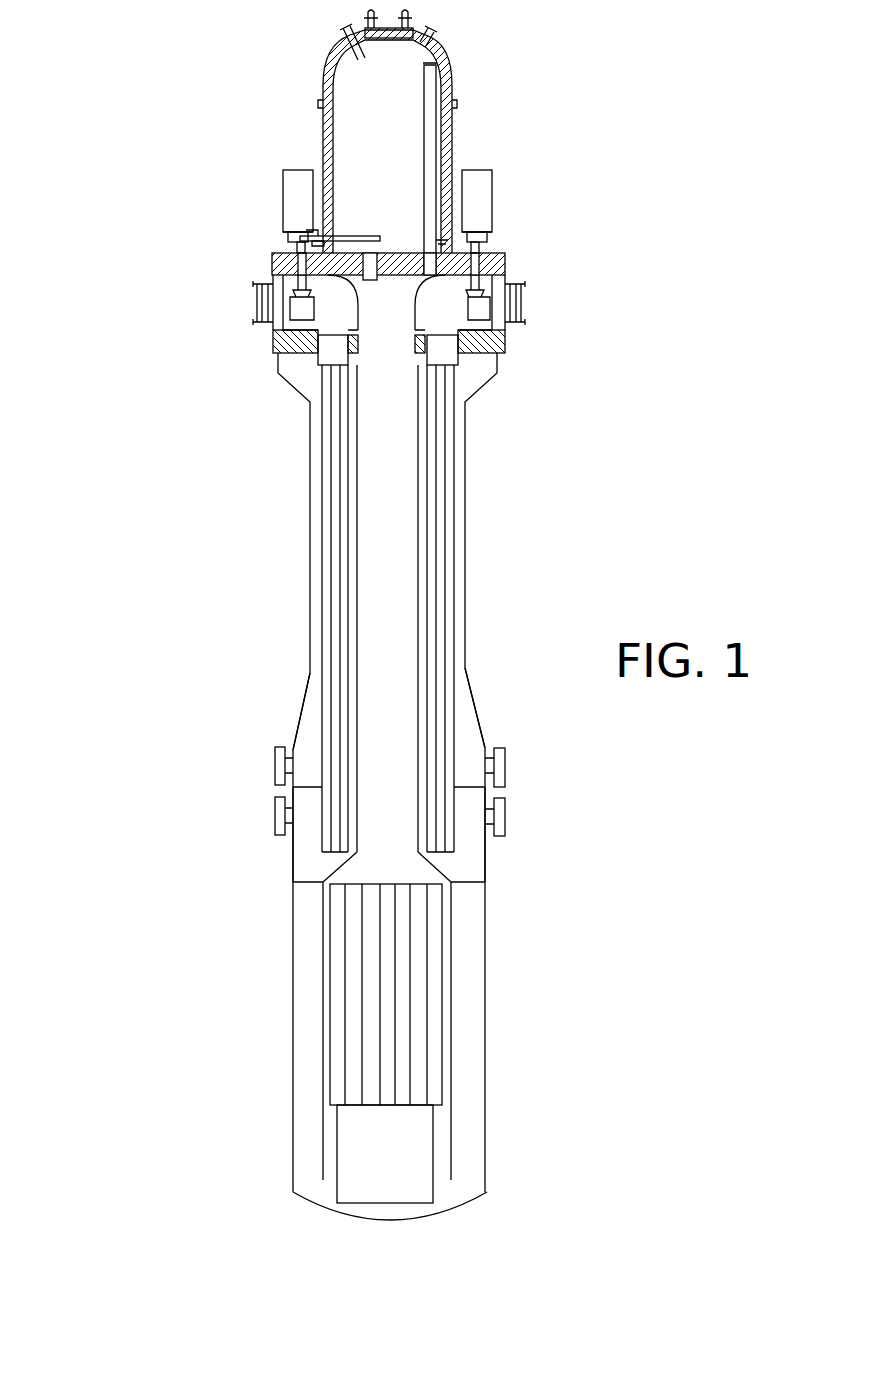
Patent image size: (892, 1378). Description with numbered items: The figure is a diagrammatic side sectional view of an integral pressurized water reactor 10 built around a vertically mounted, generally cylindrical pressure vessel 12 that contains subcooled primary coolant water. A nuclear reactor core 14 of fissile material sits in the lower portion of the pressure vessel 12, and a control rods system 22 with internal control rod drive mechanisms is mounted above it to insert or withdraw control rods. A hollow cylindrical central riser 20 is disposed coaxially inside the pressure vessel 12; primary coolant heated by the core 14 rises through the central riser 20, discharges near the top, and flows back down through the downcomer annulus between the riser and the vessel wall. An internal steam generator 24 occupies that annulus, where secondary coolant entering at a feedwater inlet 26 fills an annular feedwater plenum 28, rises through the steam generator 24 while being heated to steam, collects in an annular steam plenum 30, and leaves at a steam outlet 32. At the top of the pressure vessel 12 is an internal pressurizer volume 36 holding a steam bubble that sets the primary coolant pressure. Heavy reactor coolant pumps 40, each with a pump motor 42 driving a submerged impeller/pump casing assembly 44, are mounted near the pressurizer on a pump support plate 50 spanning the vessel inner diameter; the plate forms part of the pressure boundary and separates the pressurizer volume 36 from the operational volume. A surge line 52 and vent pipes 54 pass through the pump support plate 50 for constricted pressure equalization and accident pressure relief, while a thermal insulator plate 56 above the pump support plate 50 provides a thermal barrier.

The integral pressurized water reactor 10 is at (652, 340).
The pressure vessel 12 is at (487, 982).
The nuclear reactor core 14 is at (433, 1142).
The central riser 20 is at (376, 588).
The control rods system 22 is at (362, 1018).
The internal steam generator 24 is at (437, 473).
The feedwater inlet 26 is at (275, 817).
The annular feedwater plenum 28 is at (305, 850).
The annular steam plenum 30 is at (310, 727).
The steam outlet 32 is at (275, 767).
The internal pressurizer volume 36 is at (367, 163).
The reactor coolant pump 40 is at (246, 213).
The pump motor 42 is at (283, 194).
The impeller/pump casing assembly 44 is at (285, 296).
The pump support plate 50 is at (363, 284).
The surge line 52 is at (360, 286).
The vent pipe 54 is at (424, 105).
The thermal insulator plate 56 is at (405, 330).